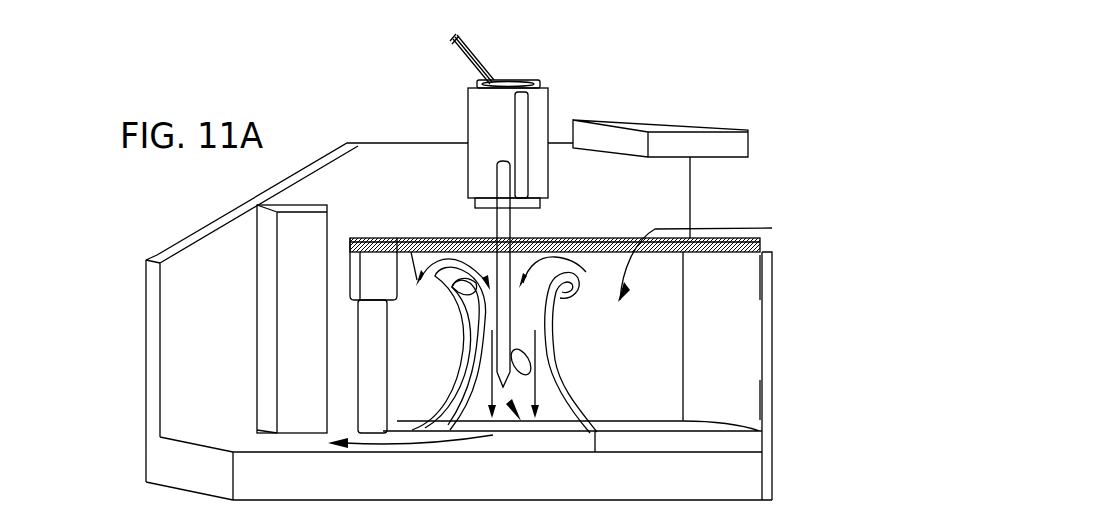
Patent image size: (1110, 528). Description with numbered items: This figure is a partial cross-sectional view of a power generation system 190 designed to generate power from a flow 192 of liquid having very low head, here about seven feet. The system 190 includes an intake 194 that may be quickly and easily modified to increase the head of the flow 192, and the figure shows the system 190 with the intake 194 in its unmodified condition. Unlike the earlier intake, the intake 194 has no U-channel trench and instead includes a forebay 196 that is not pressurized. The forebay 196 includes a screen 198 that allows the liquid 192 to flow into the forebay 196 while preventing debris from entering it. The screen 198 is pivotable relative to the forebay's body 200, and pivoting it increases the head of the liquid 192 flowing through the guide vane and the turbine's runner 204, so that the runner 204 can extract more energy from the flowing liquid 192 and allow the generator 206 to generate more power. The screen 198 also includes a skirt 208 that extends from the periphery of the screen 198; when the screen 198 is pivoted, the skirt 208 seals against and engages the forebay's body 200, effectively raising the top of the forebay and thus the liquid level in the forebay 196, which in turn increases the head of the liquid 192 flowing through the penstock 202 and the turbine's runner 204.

The power generation system 190 is at (378, 143).
The flow 192 is at (410, 237).
The intake 194 is at (773, 268).
The forebay 196 is at (770, 398).
The screen 198 is at (460, 237).
The forebay's body 200 is at (366, 352).
The penstock 202 is at (553, 330).
The turbine's runner 204 is at (522, 423).
The generator 206 is at (465, 102).
The skirt 208 is at (350, 257).